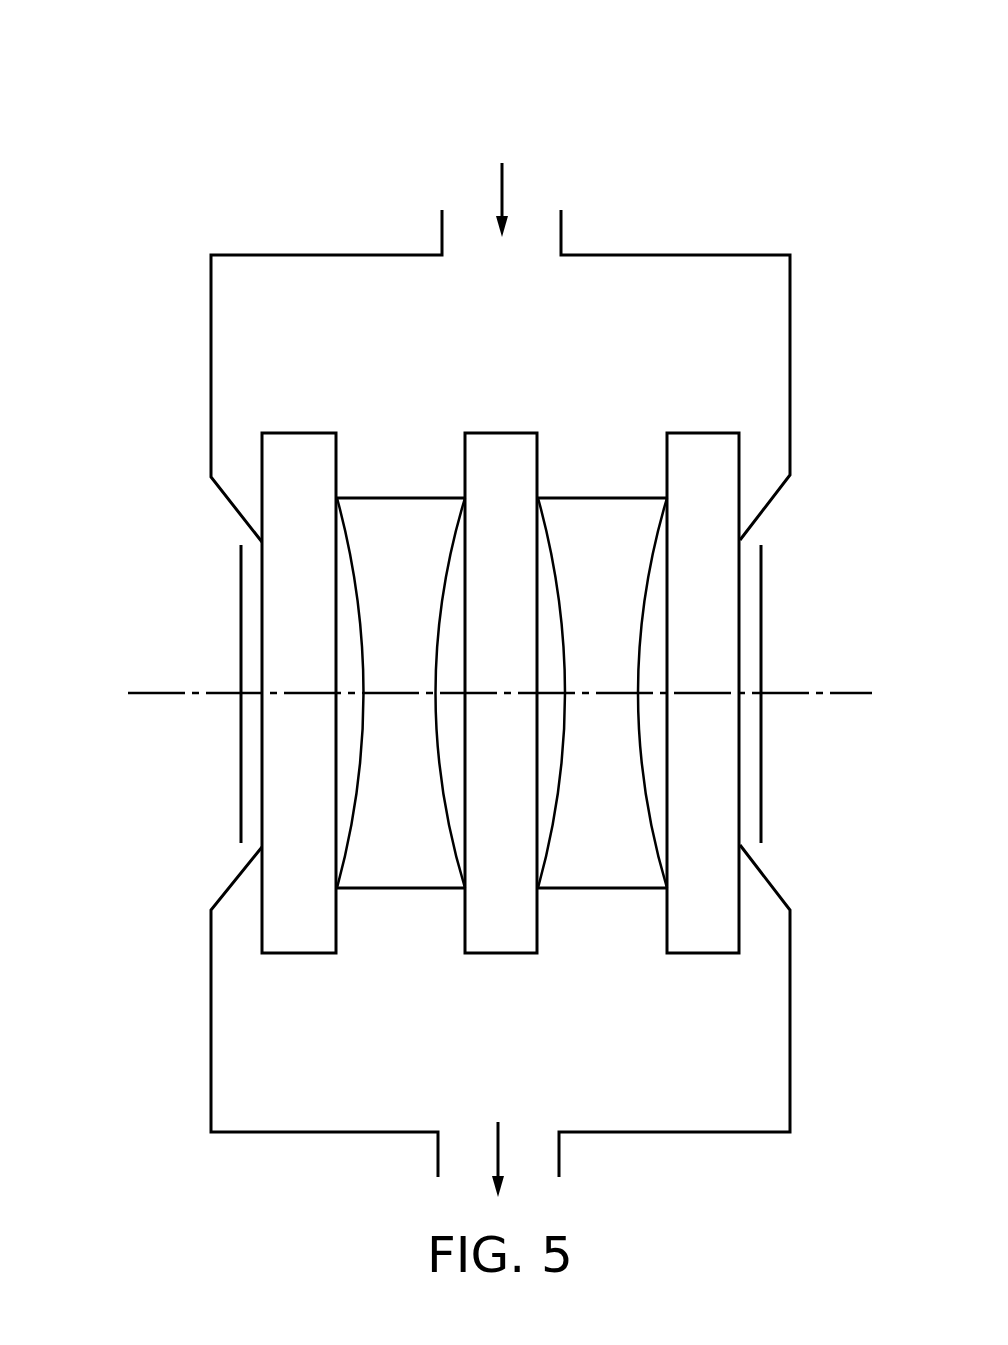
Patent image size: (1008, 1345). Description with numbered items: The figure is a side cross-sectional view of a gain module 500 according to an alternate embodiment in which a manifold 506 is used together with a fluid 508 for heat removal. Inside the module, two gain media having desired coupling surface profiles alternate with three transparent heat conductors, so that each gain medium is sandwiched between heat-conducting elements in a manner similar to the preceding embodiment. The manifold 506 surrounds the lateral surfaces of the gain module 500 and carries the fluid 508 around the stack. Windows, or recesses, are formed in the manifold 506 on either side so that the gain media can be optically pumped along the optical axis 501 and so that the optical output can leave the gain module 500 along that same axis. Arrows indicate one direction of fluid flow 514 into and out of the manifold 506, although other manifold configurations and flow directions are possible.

The gain module 500 is at (478, 602).
The optical axis 501 is at (167, 693).
The manifold 506 is at (330, 255).
The fluid 508 is at (713, 255).
The fluid flow 514 is at (503, 180).